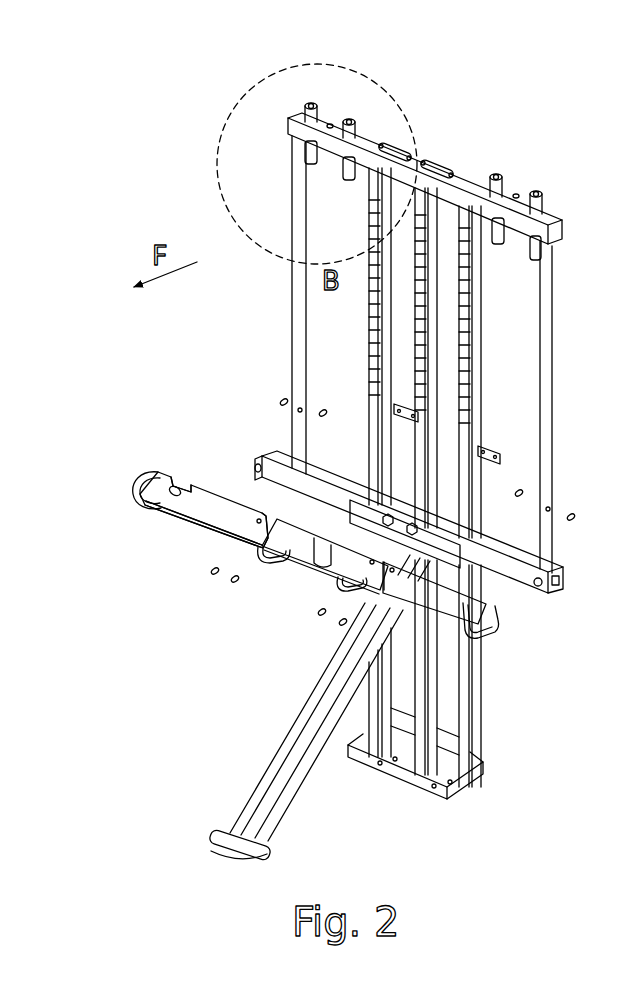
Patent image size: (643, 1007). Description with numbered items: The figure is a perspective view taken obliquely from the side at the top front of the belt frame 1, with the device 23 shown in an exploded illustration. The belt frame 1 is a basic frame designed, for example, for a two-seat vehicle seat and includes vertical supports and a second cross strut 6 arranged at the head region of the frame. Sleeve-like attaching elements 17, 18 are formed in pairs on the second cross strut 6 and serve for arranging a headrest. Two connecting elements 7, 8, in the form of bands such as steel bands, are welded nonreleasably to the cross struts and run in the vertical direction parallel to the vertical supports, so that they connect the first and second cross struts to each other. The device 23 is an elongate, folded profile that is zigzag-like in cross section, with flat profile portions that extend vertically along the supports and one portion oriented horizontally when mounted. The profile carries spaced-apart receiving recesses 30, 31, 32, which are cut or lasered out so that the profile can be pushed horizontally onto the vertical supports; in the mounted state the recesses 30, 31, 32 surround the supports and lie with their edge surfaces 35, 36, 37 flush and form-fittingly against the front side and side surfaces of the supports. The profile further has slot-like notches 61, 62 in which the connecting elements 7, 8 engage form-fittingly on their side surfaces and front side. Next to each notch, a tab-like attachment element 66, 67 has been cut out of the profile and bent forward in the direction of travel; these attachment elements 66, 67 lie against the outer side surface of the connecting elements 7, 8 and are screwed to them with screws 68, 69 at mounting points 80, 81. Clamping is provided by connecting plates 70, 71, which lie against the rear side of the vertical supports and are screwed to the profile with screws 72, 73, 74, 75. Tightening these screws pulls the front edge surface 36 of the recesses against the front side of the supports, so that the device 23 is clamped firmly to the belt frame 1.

The belt frame 1 is at (182, 845).
The second cross strut 6 is at (472, 180).
The connecting element 7 is at (296, 322).
The connecting element 8 is at (554, 418).
The sleeve-like attaching element 17 is at (352, 119).
The sleeve-like attaching element 18 is at (313, 103).
The device 23 is at (134, 527).
The recess 30 is at (262, 509).
The recess 31 is at (329, 537).
The recess 32 is at (358, 594).
The edge surface 35 is at (255, 530).
The front edge surface 36 is at (283, 558).
The edge surface 37 is at (281, 526).
The slot-like notch 61 is at (489, 602).
The slot-like notch 62 is at (181, 479).
The tab-like attachment element 66 is at (147, 485).
The tab-like attachment element 67 is at (503, 622).
The screw 68 is at (520, 490).
The screw 69 is at (326, 410).
The connecting plate 70 is at (404, 410).
The connecting plate 71 is at (489, 446).
The screw 72 is at (341, 625).
The screw 73 is at (319, 615).
The screw 74 is at (233, 583).
The screw 75 is at (211, 574).
The mounting point 80 is at (551, 508).
The mounting point 81 is at (298, 408).